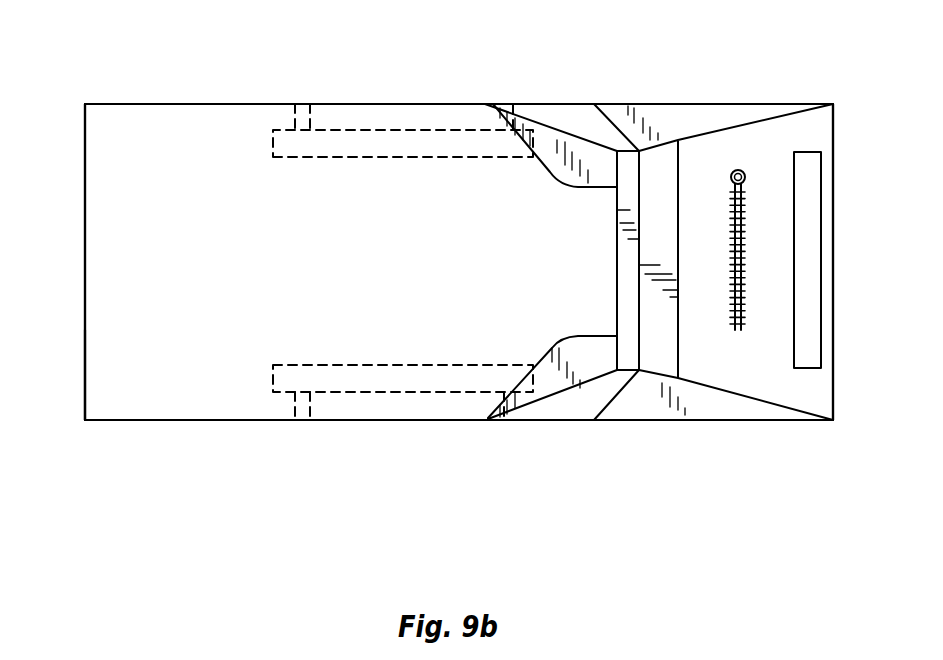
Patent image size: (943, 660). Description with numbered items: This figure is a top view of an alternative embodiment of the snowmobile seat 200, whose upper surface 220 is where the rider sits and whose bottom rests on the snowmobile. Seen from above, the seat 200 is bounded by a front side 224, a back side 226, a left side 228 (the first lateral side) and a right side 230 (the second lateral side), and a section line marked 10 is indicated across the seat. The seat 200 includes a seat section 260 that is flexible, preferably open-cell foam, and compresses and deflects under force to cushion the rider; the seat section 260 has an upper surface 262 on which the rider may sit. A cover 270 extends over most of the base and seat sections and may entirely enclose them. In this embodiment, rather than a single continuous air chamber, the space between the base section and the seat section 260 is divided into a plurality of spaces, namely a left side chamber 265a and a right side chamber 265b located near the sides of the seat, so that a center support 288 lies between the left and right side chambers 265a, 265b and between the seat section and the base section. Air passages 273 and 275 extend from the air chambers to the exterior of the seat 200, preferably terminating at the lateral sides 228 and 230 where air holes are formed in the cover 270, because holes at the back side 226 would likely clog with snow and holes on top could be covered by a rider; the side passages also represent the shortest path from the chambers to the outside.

The section line 10 is at (80, 257).
The snowmobile seat 200 is at (459, 472).
The upper surface 220 is at (177, 413).
The front side 224 is at (85, 135).
The back side 226 is at (833, 151).
The left side 228 is at (262, 410).
The right side 230 is at (235, 103).
The seat section 260 is at (150, 127).
The upper surface of the seat section 262 is at (550, 203).
The left side chamber 265a is at (410, 383).
The right side chamber 265b is at (355, 143).
The cover 270 is at (140, 383).
The air passage 273 is at (508, 420).
The air passage 275 is at (505, 108).
The center support 288 is at (440, 200).